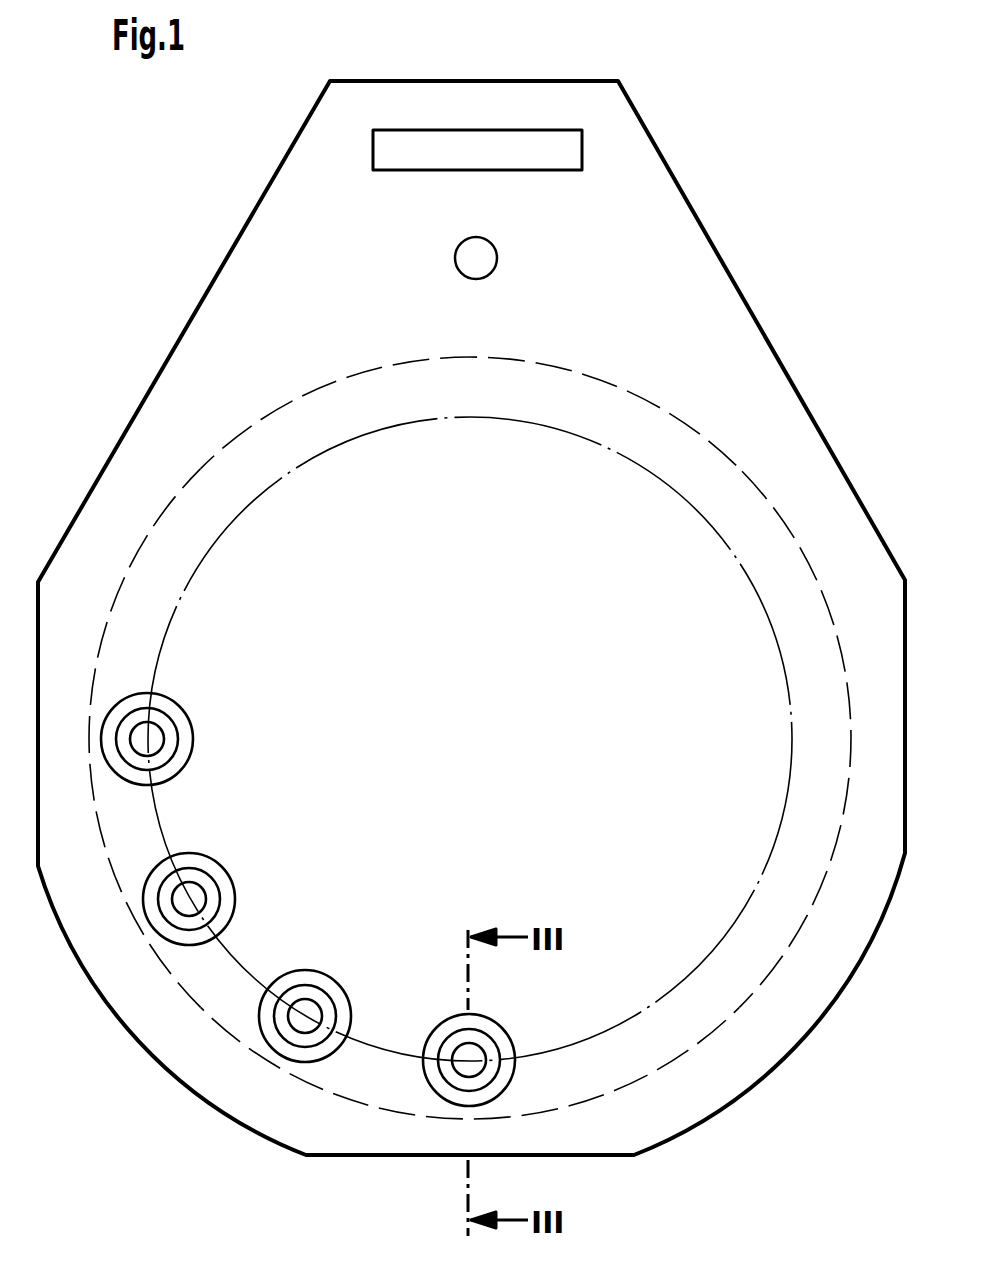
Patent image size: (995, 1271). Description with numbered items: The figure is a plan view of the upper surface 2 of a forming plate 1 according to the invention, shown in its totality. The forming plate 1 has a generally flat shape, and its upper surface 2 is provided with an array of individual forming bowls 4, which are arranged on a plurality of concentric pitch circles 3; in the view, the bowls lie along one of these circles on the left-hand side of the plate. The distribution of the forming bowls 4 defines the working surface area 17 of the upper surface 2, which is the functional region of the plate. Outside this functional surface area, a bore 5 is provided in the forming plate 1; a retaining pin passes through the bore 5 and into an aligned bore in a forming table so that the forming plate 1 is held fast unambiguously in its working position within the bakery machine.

The forming plate 1 is at (230, 317).
The upper surface 2 is at (651, 323).
The pitch circles 3 is at (657, 473).
The forming bowls 4 is at (438, 1083).
The bore 5 is at (488, 249).
The working surface area 17 is at (364, 663).